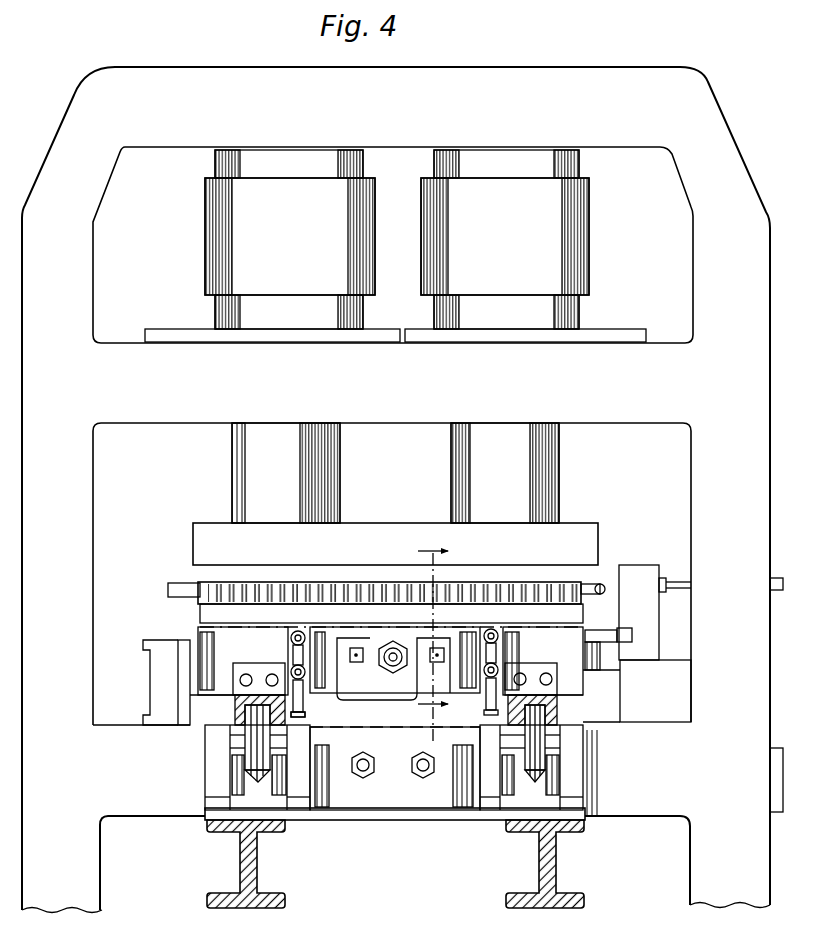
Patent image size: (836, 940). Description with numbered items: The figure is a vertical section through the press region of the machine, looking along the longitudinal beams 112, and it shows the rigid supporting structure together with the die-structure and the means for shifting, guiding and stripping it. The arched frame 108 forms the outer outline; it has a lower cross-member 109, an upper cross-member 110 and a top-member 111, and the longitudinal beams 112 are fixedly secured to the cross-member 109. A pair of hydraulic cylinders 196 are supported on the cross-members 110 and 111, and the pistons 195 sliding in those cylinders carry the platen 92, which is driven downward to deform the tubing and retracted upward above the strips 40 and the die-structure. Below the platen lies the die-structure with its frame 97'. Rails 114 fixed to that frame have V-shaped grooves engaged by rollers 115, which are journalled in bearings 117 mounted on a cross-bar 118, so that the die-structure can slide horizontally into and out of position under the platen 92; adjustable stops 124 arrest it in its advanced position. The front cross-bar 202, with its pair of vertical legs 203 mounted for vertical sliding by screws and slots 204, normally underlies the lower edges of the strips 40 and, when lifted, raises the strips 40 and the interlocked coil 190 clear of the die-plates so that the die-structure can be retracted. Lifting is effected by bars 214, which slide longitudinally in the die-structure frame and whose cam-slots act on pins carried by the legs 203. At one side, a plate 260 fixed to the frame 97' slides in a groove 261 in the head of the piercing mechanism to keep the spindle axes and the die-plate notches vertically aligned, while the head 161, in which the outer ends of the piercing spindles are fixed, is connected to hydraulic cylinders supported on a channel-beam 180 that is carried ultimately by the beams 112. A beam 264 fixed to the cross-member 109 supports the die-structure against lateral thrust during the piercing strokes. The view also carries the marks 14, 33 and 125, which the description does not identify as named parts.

The arched frame 108 is at (47, 145).
The top-member 111 is at (168, 130).
The hydraulic cylinders 196 is at (397, 239).
The cross-member 110 is at (160, 399).
The pistons 195 is at (395, 473).
The platen 92 is at (395, 544).
The center axis / direction arrow 33 is at (433, 639).
The coil 190 is at (178, 583).
The strips 40 is at (536, 591).
The front cross-bar 202 is at (390, 604).
The head 161 is at (642, 565).
The channel-beam 180 is at (637, 691).
The plate 260 is at (600, 634).
The groove 261 is at (624, 629).
The beam 264 is at (190, 688).
The rails 114 is at (236, 693).
The frame 97' is at (596, 701).
The vertical legs 203 is at (296, 654).
The screws and slots 204 is at (305, 681).
The adjustable stops 124 is at (430, 662).
The bars 214 is at (303, 706).
The center block 125 is at (440, 797).
The rollers 115 is at (600, 768).
The bearings 117 is at (300, 787).
The cross-member 109 is at (135, 785).
The cross-bar 118 is at (408, 818).
The direction of travel 14 is at (284, 835).
The longitudinal beams 112 is at (257, 876).